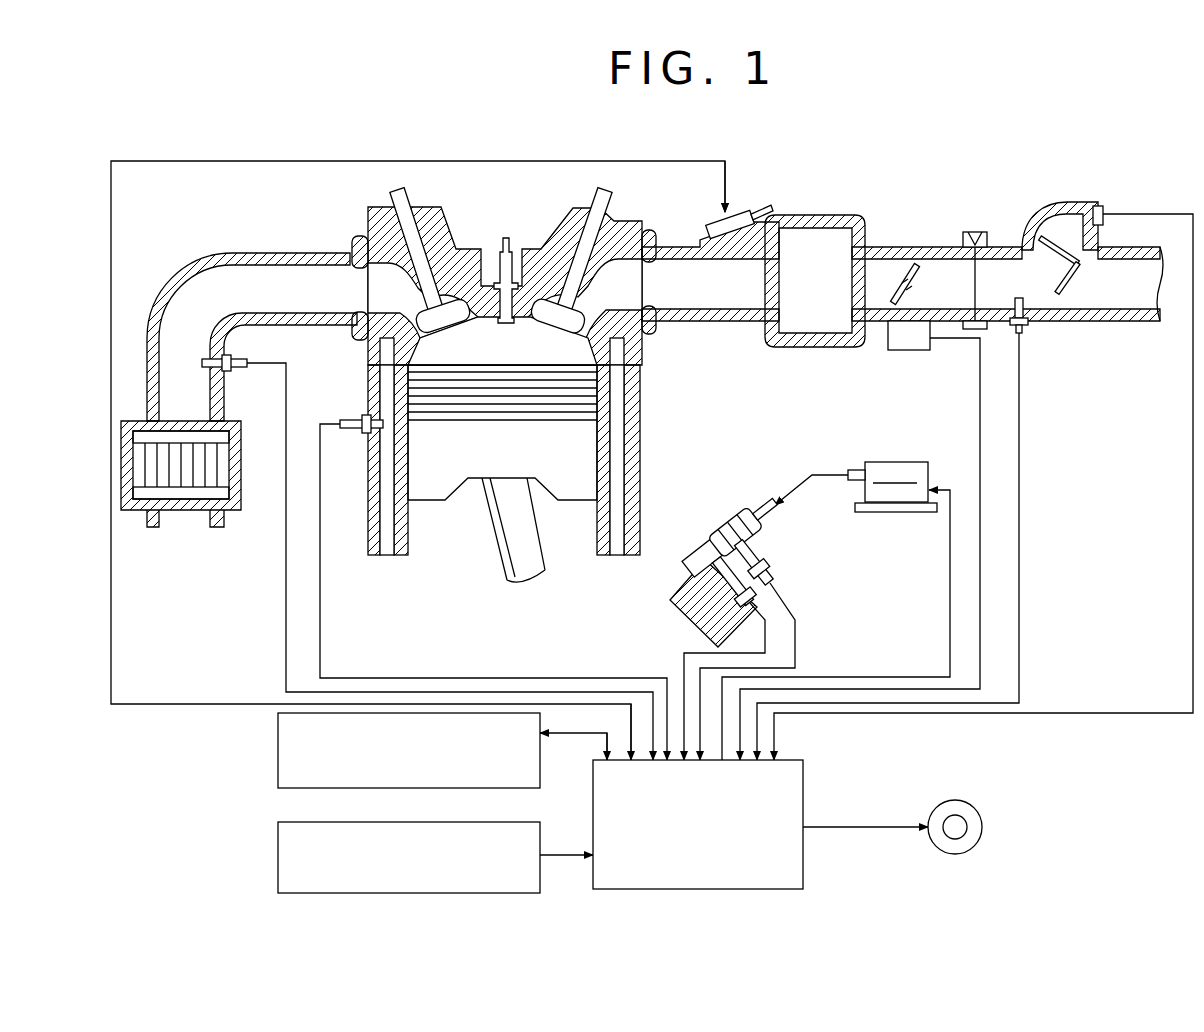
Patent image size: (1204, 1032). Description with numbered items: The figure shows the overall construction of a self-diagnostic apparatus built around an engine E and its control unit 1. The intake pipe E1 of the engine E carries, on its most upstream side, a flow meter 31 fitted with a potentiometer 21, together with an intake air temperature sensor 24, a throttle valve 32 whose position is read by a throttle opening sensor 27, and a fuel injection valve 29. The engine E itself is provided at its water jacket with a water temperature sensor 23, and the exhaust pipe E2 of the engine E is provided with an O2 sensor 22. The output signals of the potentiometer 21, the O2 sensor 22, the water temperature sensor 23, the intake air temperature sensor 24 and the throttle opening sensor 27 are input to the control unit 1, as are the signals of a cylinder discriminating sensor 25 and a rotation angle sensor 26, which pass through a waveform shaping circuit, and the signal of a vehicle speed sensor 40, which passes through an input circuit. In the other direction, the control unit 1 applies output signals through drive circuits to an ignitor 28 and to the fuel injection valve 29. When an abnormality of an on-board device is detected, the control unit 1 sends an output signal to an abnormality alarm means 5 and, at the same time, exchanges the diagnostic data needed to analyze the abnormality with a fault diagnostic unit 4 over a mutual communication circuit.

The control unit 1 is at (805, 775).
The fault diagnostic unit 4 is at (282, 751).
The abnormality alarm means 5 is at (953, 800).
The potentiometer 21 is at (1100, 210).
The O2 sensor 22 is at (240, 368).
The water temperature sensor 23 is at (352, 420).
The intake air temperature sensor 24 is at (1028, 328).
The cylinder discriminating sensor 25 is at (770, 580).
The rotation angle sensor 26 is at (782, 603).
The throttle opening sensor 27 is at (920, 352).
The ignitor 28 is at (878, 470).
The fuel injection valve 29 is at (738, 215).
The flow meter 31 is at (1062, 230).
The throttle valve 32 is at (923, 275).
The vehicle speed sensor 40 is at (282, 856).
The engine E is at (435, 222).
The intake pipe E1 is at (884, 245).
The exhaust pipe E2 is at (195, 256).